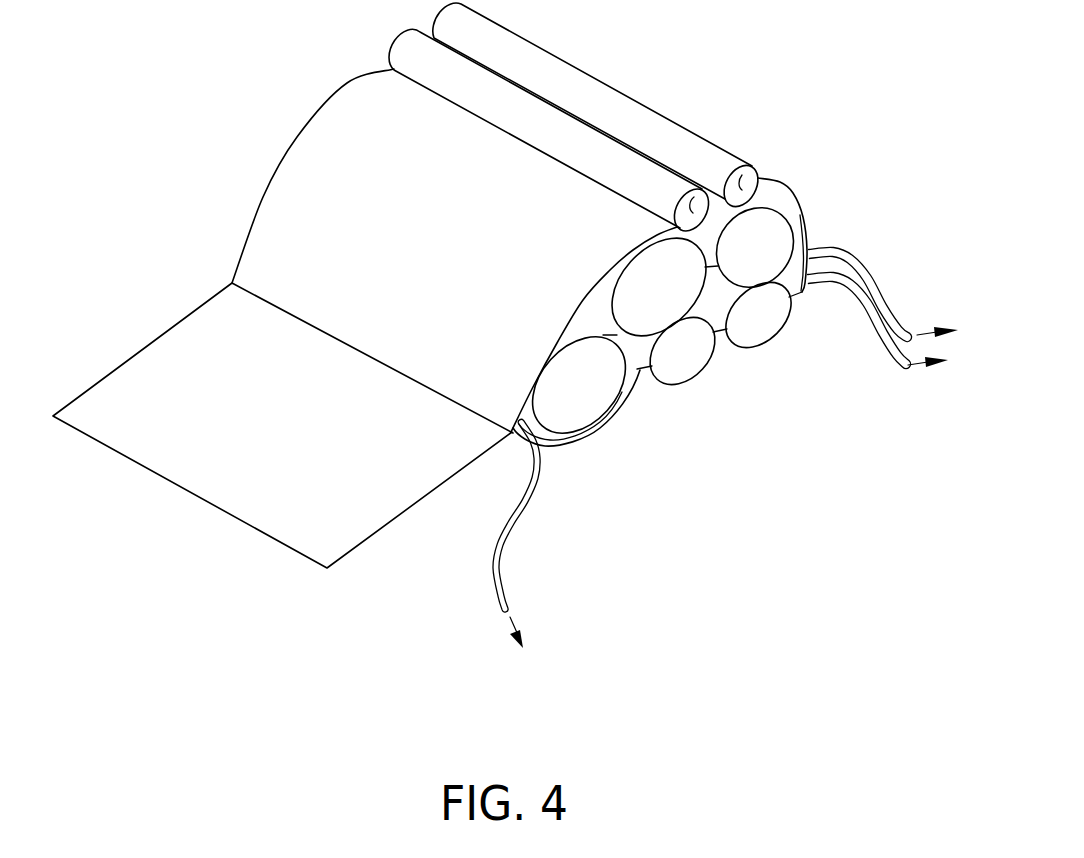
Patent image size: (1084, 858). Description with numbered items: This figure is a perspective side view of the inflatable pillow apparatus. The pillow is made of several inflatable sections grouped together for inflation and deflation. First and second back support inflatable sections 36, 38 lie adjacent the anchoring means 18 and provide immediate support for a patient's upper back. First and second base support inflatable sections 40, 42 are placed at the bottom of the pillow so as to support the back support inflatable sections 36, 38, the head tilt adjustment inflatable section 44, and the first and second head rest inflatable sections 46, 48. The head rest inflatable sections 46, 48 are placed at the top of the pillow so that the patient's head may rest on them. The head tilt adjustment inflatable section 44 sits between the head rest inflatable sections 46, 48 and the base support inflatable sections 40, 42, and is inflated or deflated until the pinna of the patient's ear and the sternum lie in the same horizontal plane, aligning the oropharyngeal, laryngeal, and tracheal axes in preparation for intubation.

The anchoring means 18 is at (227, 473).
The first back support inflatable section 36 is at (565, 402).
The second back support inflatable section 38 is at (651, 305).
The first base support inflatable section 40 is at (690, 348).
The second base support inflatable section 42 is at (772, 309).
The head tilt adjustment inflatable section 44 is at (768, 238).
The first head rest inflatable section 46 is at (703, 193).
The second head rest inflatable section 48 is at (744, 173).